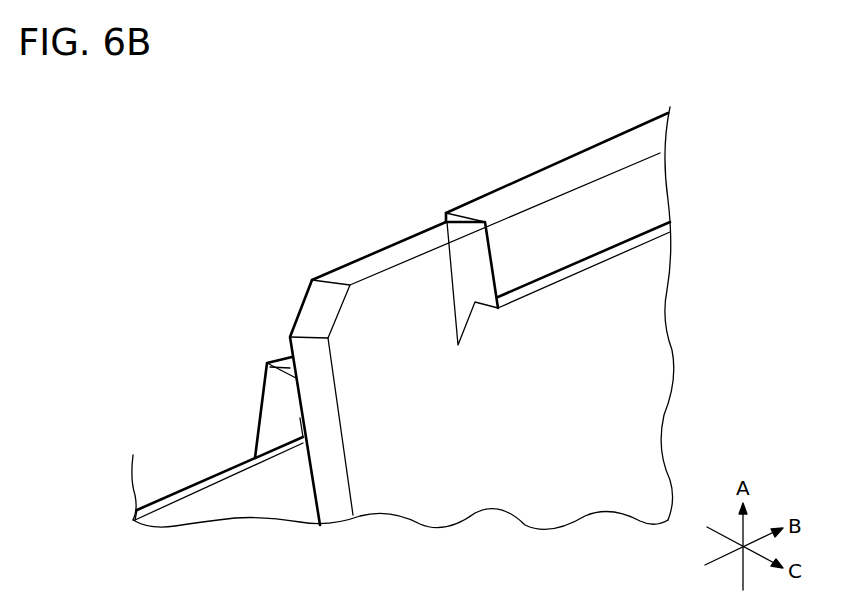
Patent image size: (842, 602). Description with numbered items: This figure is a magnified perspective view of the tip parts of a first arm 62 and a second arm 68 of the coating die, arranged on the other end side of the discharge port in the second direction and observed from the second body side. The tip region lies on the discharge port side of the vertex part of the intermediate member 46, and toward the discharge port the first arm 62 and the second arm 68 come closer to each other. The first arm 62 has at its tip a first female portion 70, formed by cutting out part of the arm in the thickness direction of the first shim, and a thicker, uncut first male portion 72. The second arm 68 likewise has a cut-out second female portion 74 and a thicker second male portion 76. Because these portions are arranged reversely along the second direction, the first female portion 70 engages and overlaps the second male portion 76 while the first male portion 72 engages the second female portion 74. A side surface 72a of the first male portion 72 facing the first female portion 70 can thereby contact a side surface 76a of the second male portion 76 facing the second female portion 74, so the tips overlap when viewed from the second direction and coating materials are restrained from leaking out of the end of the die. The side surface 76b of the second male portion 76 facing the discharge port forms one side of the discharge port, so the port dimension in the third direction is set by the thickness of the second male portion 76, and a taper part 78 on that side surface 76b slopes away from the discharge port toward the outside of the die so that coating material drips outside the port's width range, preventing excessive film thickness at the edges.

The intermediate member 46 is at (242, 502).
The first arm 62 is at (672, 185).
The second arm 68 is at (673, 490).
The first female portion 70 is at (287, 357).
The first male portion 72 is at (503, 203).
The side surface of the first male portion 72a is at (444, 218).
The second female portion 74 is at (575, 267).
The second male portion 76 is at (400, 247).
The side surface of the second male portion 76a is at (477, 266).
The side surface of the second male portion facing the discharge port 76b is at (315, 383).
The taper part 78 is at (312, 308).